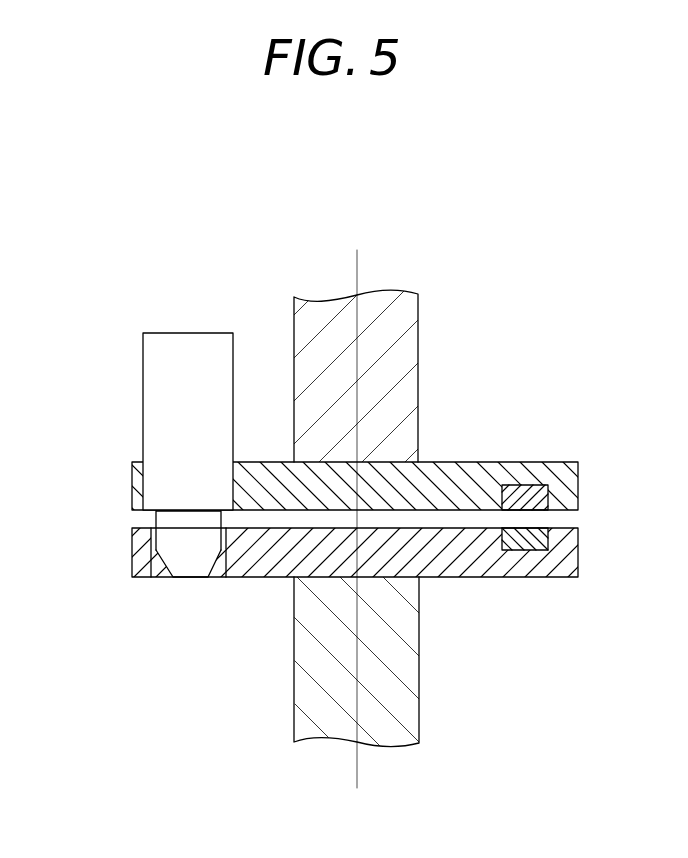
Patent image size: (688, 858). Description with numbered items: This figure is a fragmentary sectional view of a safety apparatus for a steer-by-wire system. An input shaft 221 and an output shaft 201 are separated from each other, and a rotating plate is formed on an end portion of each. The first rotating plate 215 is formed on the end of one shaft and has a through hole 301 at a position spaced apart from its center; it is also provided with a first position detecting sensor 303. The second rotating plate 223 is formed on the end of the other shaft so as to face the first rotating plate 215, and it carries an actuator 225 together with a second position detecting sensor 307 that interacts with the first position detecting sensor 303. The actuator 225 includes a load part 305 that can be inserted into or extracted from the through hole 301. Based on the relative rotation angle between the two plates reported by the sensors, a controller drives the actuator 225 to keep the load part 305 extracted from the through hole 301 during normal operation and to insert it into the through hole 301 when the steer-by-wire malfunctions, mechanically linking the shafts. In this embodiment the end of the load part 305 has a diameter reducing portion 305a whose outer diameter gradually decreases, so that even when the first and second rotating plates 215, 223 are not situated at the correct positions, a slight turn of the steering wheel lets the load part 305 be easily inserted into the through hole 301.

The output shaft 201 is at (412, 710).
The first rotating plate 215 is at (455, 572).
The input shaft 221 is at (410, 353).
The second rotating plate 223 is at (470, 462).
The actuator 225 is at (189, 338).
The through hole 301 is at (229, 561).
The first position detecting sensor 303 is at (520, 548).
The load part 305 is at (167, 544).
The diameter reducing portion 305a is at (152, 578).
The second position detecting sensor 307 is at (520, 490).